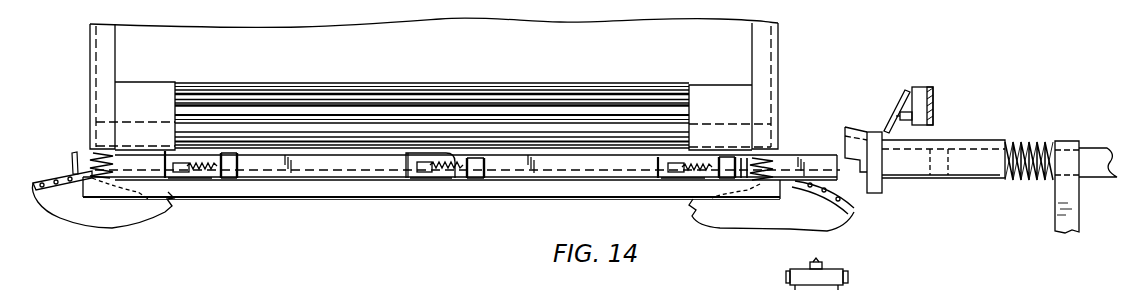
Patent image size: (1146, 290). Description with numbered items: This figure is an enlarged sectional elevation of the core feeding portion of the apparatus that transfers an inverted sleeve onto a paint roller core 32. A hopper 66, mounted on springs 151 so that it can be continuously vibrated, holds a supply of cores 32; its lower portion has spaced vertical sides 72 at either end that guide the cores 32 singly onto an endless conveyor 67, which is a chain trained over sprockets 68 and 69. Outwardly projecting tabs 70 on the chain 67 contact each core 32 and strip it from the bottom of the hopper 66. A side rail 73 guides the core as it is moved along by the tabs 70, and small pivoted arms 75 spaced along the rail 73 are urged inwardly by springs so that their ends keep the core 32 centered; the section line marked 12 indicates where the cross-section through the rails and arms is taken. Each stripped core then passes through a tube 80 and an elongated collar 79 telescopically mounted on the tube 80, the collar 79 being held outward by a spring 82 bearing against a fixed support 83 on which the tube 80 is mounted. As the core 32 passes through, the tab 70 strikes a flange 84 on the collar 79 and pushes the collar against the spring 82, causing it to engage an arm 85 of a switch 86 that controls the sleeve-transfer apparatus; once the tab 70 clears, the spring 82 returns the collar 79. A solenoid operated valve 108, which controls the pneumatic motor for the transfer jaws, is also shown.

The hopper 66 is at (434, 83).
The vertical sides 72 is at (434, 86).
The side rail 73 is at (344, 181).
The arm 75 is at (407, 176).
The section line 12 is at (461, 144).
The springs 151 is at (92, 156).
The tab 70 is at (70, 163).
The sprocket 68 is at (103, 199).
The sprocket 69 is at (771, 215).
The endless conveyor 67 is at (866, 212).
The flange 84 is at (881, 186).
The arm 85 is at (897, 110).
The switch 86 is at (936, 96).
The collar 79 is at (942, 142).
The spring 82 is at (1022, 145).
The tube 80 is at (1057, 142).
The paint roller core 32 is at (1115, 151).
The fixed support 83 is at (1073, 189).
The solenoid operated valve 108 is at (849, 280).